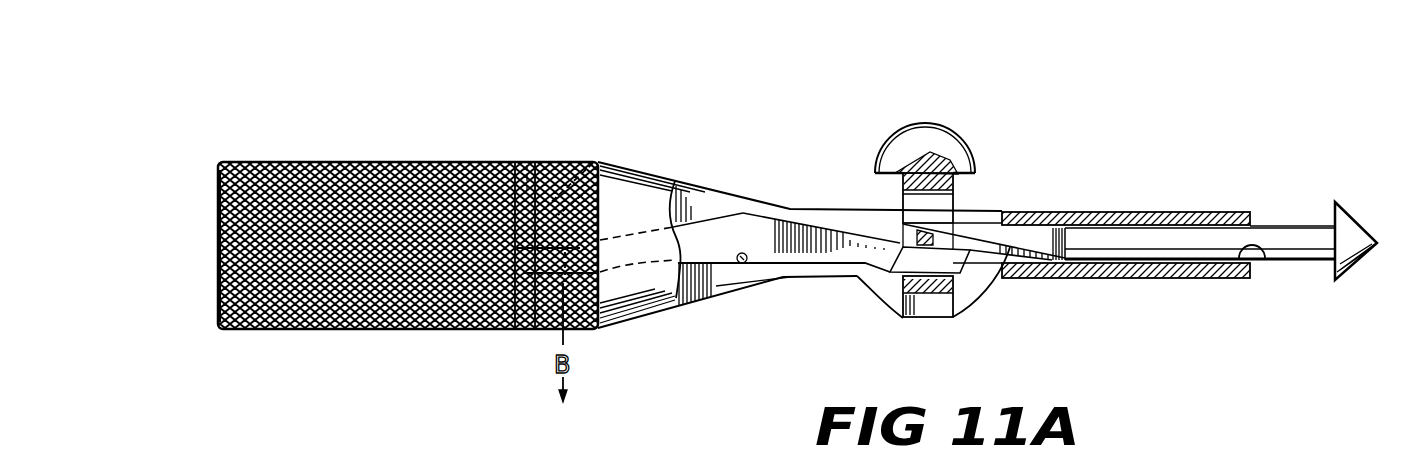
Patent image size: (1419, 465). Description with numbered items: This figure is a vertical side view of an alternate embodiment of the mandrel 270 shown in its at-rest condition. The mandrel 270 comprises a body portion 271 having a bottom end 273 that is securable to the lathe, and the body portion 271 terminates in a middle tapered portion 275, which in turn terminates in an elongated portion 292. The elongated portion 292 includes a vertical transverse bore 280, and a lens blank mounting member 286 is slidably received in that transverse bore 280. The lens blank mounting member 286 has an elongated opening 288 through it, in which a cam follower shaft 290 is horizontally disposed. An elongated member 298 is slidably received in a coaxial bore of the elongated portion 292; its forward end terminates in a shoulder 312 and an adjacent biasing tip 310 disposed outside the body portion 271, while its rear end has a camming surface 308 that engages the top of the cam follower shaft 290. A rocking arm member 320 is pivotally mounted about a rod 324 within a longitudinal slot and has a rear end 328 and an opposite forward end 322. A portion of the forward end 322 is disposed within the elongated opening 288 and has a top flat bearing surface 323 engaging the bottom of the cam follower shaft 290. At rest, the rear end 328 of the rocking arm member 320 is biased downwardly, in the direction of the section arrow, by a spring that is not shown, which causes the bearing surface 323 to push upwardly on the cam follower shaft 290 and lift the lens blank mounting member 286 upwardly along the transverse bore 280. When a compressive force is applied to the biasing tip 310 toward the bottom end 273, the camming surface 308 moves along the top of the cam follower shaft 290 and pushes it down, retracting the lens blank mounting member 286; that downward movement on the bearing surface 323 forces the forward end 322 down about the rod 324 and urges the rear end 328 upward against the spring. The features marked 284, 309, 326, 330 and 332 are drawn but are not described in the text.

The mandrel 270 is at (1086, 101).
The body portion 271 is at (298, 126).
The bottom end 273 is at (216, 213).
The middle tapered portion 275 is at (623, 322).
The transverse bore 280 is at (930, 304).
The dome cap 284 is at (915, 132).
The lens blank mounting member 286 is at (896, 202).
The elongated opening 288 is at (937, 207).
The cam follower shaft 290 is at (906, 250).
The elongated portion 292 is at (1098, 212).
The elongated member 298 is at (1290, 264).
The camming surface 308 is at (1010, 252).
The inner rod 309 is at (1293, 224).
The biasing tip 310 is at (1379, 244).
The shoulder 312 is at (1337, 278).
The rocking arm member 320 is at (711, 225).
The forward end 322 is at (962, 274).
The top flat bearing surface 323 is at (937, 250).
The rod 324 is at (719, 266).
The pin 326 is at (746, 262).
The rear end 328 is at (612, 173).
The bore 330 is at (594, 163).
The slot 332 is at (527, 162).